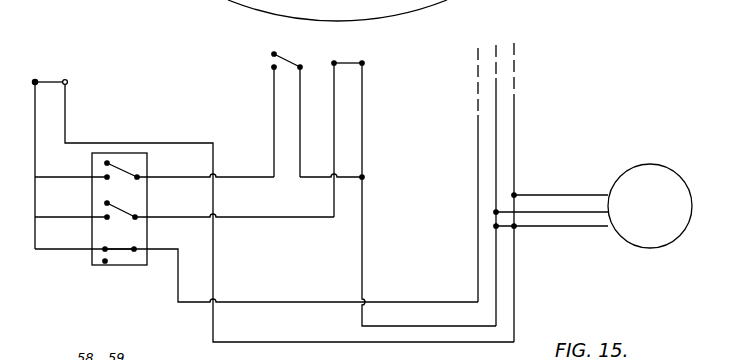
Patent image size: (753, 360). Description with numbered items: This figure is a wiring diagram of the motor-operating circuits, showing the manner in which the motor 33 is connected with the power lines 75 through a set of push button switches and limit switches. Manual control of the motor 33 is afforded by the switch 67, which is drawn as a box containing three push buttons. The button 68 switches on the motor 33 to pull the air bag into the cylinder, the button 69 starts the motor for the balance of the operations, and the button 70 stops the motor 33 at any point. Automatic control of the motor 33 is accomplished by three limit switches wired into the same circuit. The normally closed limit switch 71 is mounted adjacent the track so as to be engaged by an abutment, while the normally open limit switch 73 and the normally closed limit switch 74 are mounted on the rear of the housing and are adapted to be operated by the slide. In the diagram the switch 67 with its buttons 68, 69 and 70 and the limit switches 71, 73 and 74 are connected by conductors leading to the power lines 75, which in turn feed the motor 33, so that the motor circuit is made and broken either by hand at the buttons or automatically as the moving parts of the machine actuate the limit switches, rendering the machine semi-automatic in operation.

The normally closed limit switch 71 is at (50, 80).
The switch 67 is at (120, 268).
The button 69 is at (101, 173).
The button 68 is at (101, 214).
The button 70 is at (99, 256).
The normally open limit switch 73 is at (289, 63).
The normally closed limit switch 74 is at (347, 66).
The power lines 75 is at (514, 78).
The motor 33 is at (643, 241).